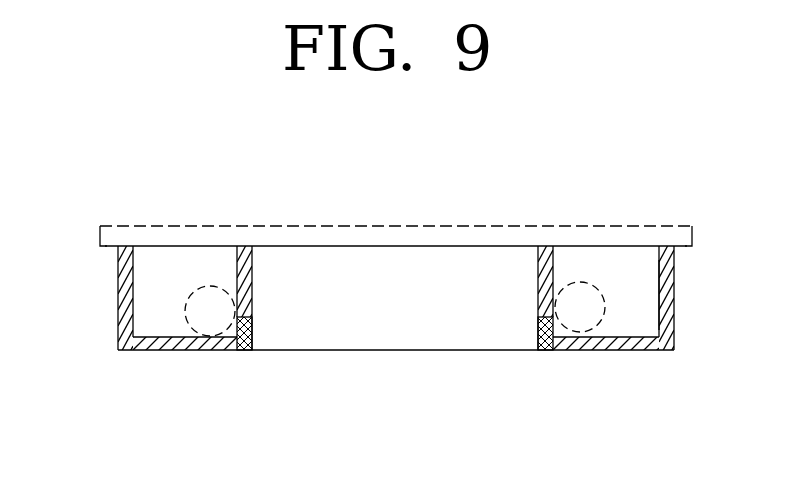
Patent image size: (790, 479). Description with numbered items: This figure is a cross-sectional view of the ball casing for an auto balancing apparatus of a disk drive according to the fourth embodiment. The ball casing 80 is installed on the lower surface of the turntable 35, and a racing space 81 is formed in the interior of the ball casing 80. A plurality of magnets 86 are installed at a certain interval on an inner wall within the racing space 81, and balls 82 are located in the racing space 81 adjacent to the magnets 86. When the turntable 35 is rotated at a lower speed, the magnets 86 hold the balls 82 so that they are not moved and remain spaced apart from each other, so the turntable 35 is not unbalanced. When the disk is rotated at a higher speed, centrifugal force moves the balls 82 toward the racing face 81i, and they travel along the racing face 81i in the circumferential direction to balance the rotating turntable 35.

The turntable 35 is at (100, 233).
The racing space 81 is at (628, 265).
The racing face 81i is at (659, 279).
The ball casing 80 is at (645, 345).
The balls 82 is at (202, 318).
The magnets 86 is at (248, 350).